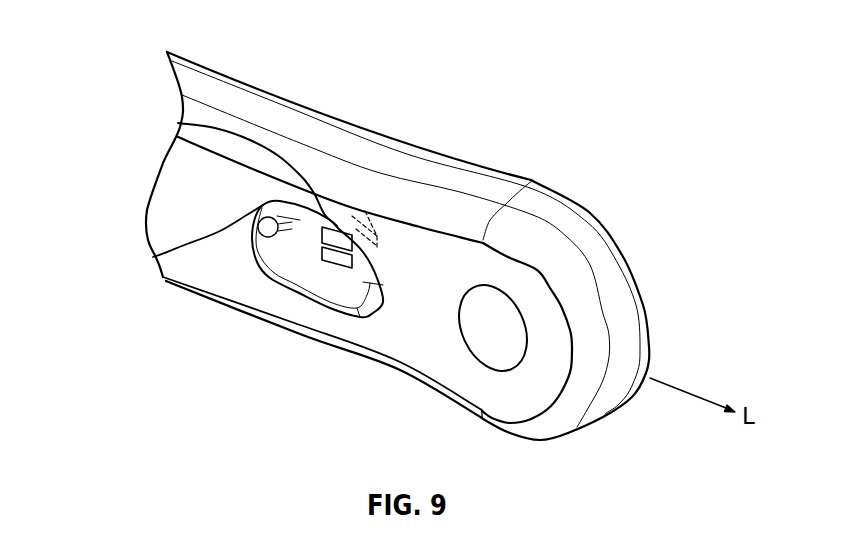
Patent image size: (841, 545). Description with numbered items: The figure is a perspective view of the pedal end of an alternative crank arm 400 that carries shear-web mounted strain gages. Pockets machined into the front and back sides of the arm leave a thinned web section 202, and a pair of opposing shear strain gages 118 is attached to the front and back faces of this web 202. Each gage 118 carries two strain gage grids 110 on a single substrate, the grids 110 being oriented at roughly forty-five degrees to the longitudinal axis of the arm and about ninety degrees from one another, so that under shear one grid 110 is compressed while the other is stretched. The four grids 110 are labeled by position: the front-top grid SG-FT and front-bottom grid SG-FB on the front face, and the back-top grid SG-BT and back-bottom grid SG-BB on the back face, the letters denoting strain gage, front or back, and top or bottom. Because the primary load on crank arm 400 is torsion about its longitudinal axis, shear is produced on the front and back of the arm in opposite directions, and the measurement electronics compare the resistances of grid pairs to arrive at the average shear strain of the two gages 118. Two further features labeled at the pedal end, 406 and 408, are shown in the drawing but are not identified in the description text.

The crank arm 400 is at (163, 215).
The thinned web section 202 is at (153, 257).
The strain gage grid 110 is at (366, 205).
The shear strain gage 118 is at (358, 204).
The rounded end rim 406 is at (627, 325).
The mounting hole 408 is at (497, 345).
The back-top strain gage grid SG-BT is at (350, 205).
The front-top strain gage grid SG-FT is at (178, 123).
The back-bottom strain gage grid SG-BB is at (390, 247).
The front-bottom strain gage grid SG-FB is at (344, 270).